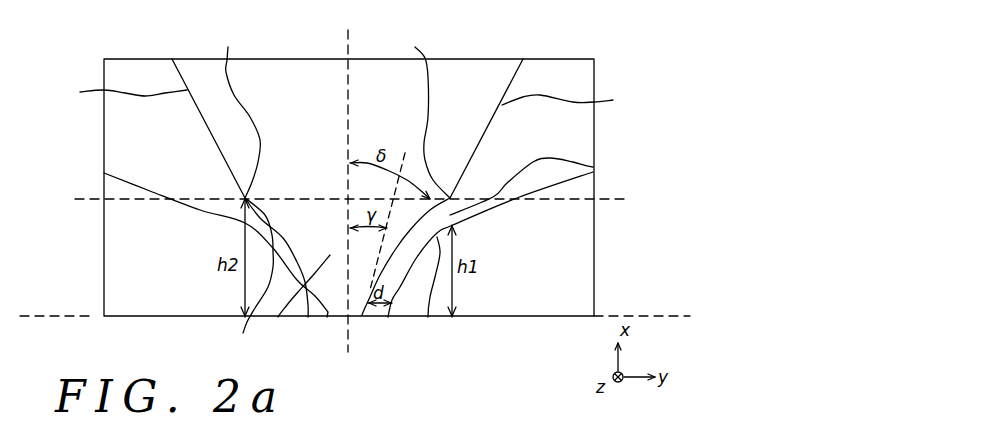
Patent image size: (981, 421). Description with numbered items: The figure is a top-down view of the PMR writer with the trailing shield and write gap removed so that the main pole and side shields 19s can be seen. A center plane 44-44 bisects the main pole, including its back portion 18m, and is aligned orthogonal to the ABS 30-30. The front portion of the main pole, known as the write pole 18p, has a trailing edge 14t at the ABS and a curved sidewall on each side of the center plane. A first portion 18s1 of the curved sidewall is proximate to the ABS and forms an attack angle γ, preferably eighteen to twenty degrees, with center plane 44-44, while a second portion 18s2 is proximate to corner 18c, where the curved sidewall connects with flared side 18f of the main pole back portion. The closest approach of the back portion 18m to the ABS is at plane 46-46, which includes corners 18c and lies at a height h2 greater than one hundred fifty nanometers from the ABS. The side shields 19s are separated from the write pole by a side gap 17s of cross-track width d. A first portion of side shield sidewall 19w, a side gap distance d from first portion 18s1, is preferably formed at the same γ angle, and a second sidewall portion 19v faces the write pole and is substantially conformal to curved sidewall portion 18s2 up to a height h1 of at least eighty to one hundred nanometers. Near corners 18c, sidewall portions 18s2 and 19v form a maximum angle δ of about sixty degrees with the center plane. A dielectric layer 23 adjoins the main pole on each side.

The trailing edge 14t is at (362, 315).
The side gap 17s is at (593, 167).
The corner 18c is at (347, 113).
The main pole back portion 18m is at (284, 83).
The flared side 18f is at (348, 100).
The write pole 18p is at (278, 317).
The first portion of curved sidewall 18s1 is at (315, 318).
The second portion of curved sidewall 18s2 is at (241, 277).
The side shields 19s is at (120, 251).
The second sidewall portion of side shield 19v is at (428, 317).
The first portion of side shield sidewall 19w is at (393, 297).
The dielectric layer 23 is at (118, 128).
The ABS 30 is at (361, 320).
The center plane 44 is at (349, 192).
The plane of closest approach 46 is at (353, 201).